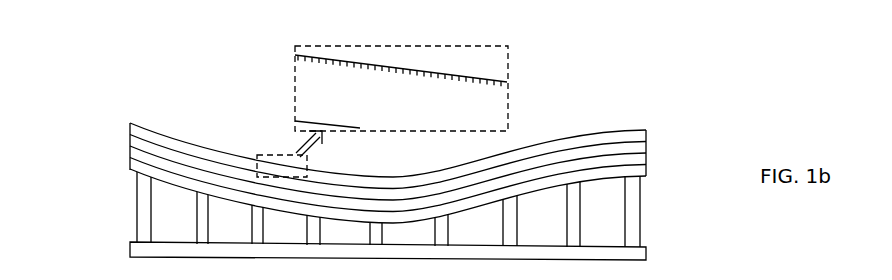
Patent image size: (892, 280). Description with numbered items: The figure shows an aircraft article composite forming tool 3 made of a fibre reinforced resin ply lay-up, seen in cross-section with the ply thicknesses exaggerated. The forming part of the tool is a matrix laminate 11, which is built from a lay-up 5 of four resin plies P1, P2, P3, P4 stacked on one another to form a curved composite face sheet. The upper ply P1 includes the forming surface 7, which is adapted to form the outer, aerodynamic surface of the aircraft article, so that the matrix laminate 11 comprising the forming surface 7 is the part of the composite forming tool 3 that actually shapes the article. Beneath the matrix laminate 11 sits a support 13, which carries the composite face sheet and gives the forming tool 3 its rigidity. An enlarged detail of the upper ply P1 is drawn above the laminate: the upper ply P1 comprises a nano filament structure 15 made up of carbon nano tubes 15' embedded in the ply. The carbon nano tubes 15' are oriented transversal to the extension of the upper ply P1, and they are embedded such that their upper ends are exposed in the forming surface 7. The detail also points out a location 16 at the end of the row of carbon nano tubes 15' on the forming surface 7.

The aircraft article composite forming tool 3 is at (607, 97).
The matrix laminate 11 is at (669, 137).
The lay-up 5 is at (663, 153).
The forming surface 7 is at (179, 135).
The support 13 is at (638, 207).
The nano filament structure 15 is at (401, 93).
The carbon nano tubes 15' is at (401, 72).
The end of microstructured surface 16 is at (512, 84).
The upper ply P1 is at (128, 127).
The resin ply P2 is at (128, 140).
The resin ply P3 is at (128, 149).
The resin ply P4 is at (128, 163).